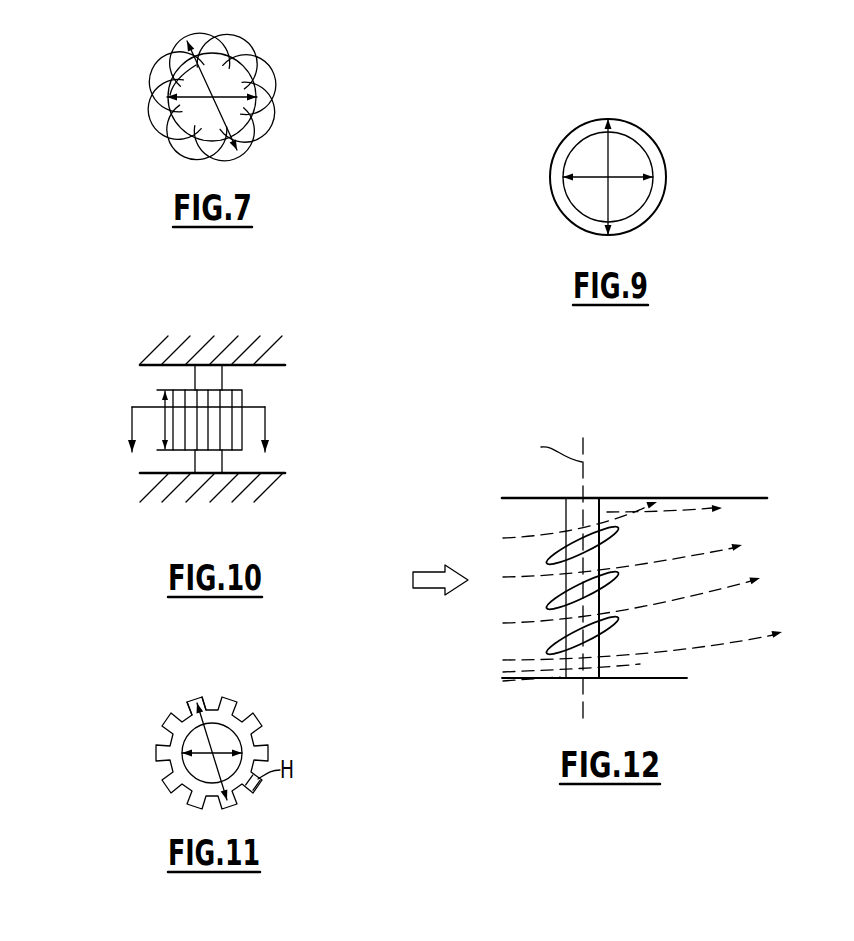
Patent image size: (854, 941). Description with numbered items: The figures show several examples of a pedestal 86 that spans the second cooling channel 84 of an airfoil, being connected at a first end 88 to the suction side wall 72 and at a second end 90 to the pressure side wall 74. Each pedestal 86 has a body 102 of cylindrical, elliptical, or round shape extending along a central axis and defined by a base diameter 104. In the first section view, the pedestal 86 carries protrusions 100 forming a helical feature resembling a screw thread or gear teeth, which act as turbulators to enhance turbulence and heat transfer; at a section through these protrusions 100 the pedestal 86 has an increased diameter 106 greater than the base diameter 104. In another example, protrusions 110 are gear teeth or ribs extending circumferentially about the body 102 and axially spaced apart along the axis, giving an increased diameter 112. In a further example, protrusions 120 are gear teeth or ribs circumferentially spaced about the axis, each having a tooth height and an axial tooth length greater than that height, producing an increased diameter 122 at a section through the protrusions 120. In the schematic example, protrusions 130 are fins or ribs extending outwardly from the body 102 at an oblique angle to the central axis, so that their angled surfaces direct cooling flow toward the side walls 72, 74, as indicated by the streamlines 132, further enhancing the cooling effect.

In FIG. 10, the suction side wall 72 is at (253, 365).
In FIG. 12, the suction side wall 72 is at (690, 498).
In FIG. 10, the pressure side wall 74 is at (237, 485).
In FIG. 12, the pressure side wall 74 is at (653, 680).
In FIG. 10, the second cooling channel 84 is at (198, 423).
In FIG. 12, the second cooling channel 84 is at (587, 583).
In FIG. 7, the pedestal 86 is at (227, 86).
In FIG. 10, the pedestal 86 is at (209, 422).
In FIG. 12, the pedestal 86 is at (567, 522).
In FIG. 10, the first end 88 is at (193, 372).
In FIG. 10, the second end 90 is at (190, 463).
In FIG. 7, the protrusions 100 is at (170, 137).
In FIG. 7, the body 102 is at (257, 112).
In FIG. 9, the body 102 is at (580, 160).
In FIG. 11, the body 102 is at (192, 742).
In FIG. 12, the body 102 is at (607, 557).
In FIG. 7, the base diameter 104 is at (227, 92).
In FIG. 9, the base diameter 104 is at (632, 172).
In FIG. 11, the base diameter 104 is at (207, 758).
In FIG. 7, the increased diameter 106 is at (157, 80).
In FIG. 9, the protrusions 110 is at (640, 137).
In FIG. 9, the increased diameter 112 is at (607, 207).
In FIG. 10, the protrusions 120 is at (228, 400).
In FIG. 11, the protrusions 120 is at (259, 718).
In FIG. 11, the increased diameter 122 is at (190, 714).
In FIG. 12, the protrusions 130 is at (560, 591).
In FIG. 12, the streamlines 132 is at (697, 590).